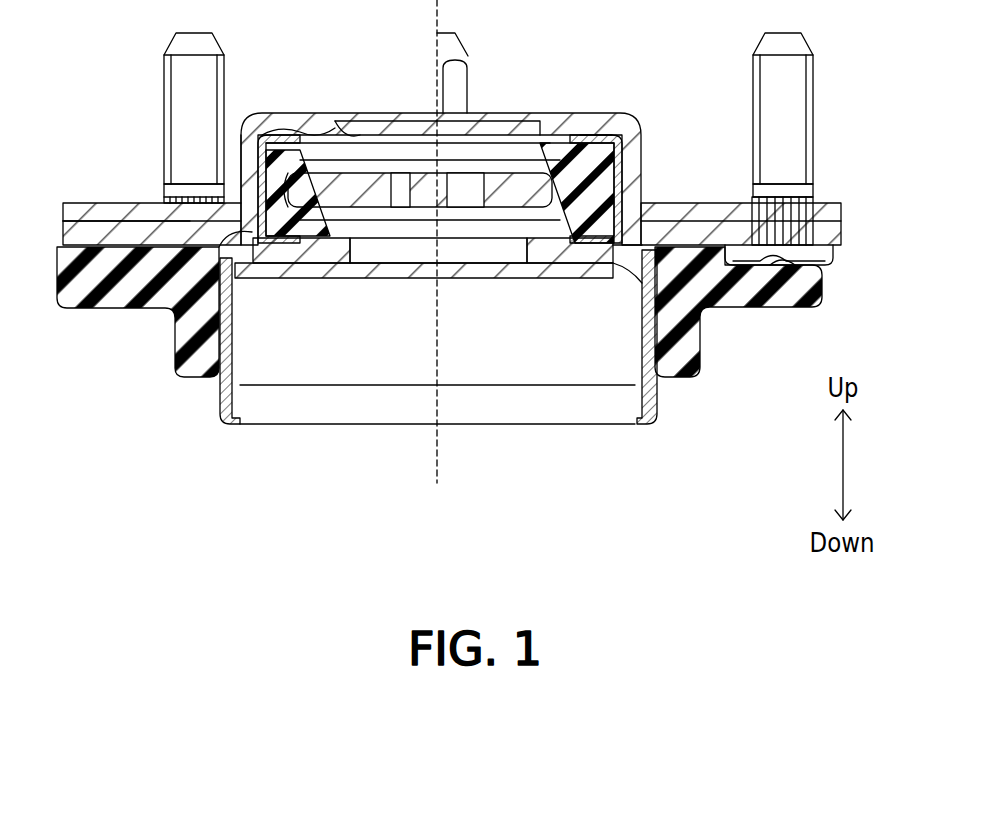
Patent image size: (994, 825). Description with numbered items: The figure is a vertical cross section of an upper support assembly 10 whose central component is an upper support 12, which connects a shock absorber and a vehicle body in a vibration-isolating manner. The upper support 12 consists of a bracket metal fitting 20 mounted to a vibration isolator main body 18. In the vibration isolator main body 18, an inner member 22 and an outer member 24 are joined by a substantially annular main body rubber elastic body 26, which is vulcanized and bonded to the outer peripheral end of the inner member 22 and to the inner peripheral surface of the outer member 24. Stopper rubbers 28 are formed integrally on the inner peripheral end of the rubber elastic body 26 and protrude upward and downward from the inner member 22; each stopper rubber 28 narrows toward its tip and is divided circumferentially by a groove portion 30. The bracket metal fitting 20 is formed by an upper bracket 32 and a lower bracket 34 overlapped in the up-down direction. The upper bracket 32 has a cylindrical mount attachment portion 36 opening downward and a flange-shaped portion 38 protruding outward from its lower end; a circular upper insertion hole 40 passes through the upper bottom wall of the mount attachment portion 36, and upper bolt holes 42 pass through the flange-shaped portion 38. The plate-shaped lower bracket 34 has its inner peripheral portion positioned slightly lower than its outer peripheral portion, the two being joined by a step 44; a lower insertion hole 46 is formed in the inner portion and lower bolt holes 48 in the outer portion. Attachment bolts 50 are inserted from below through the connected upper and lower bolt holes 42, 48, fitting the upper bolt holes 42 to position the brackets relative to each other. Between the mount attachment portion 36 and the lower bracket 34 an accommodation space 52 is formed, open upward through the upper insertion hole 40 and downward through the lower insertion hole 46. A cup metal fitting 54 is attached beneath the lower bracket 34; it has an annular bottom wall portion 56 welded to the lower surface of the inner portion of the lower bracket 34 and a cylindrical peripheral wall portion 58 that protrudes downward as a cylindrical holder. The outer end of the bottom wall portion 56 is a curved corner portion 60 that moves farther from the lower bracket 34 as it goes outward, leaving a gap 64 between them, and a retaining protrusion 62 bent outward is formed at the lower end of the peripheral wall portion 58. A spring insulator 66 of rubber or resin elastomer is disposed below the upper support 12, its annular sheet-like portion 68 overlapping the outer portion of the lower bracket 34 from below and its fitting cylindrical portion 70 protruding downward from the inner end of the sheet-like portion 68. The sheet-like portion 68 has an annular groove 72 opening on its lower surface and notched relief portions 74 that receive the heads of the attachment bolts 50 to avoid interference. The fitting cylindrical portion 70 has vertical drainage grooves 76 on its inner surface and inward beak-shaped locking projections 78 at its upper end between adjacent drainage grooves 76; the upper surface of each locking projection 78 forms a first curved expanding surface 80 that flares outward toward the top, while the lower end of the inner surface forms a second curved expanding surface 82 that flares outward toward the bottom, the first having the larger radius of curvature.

The upper support assembly 10 is at (867, 122).
The upper support 12 is at (655, 116).
The vibration isolator main body 18 is at (601, 122).
The bracket metal fitting 20 is at (100, 53).
The inner member 22 is at (525, 192).
The outer member 24 is at (616, 160).
The main body rubber elastic body 26 is at (600, 193).
The stopper rubber 28 is at (577, 148).
The groove portion 30 is at (300, 158).
The upper bracket 32 is at (236, 112).
The lower bracket 34 is at (185, 200).
The mount attachment portion 36 is at (292, 124).
The flange-shaped portion 38 is at (120, 210).
The upper insertion hole 40 is at (354, 133).
The upper bolt hole 42 is at (805, 198).
The step 44 is at (250, 272).
The lower insertion hole 46 is at (530, 248).
The lower bolt hole 48 is at (800, 256).
The attachment bolt 50 is at (205, 48).
The accommodation space 52 is at (628, 281).
The cup metal fitting 54 is at (453, 370).
The bottom wall portion 56 is at (335, 276).
The peripheral wall portion 58 is at (370, 360).
The curved corner portion 60 is at (236, 283).
The retaining protrusion 62 is at (218, 417).
The gap 64 is at (174, 330).
The spring insulator 66 is at (750, 334).
The sheet-like portion 68 is at (97, 273).
The fitting cylindrical portion 70 is at (195, 345).
The annular groove 72 is at (105, 310).
The relief portion 74 is at (800, 262).
The drainage groove 76 is at (234, 320).
The locking projection 78 is at (653, 268).
The first curved expanding surface 80 is at (643, 260).
The second curved expanding surface 82 is at (650, 390).